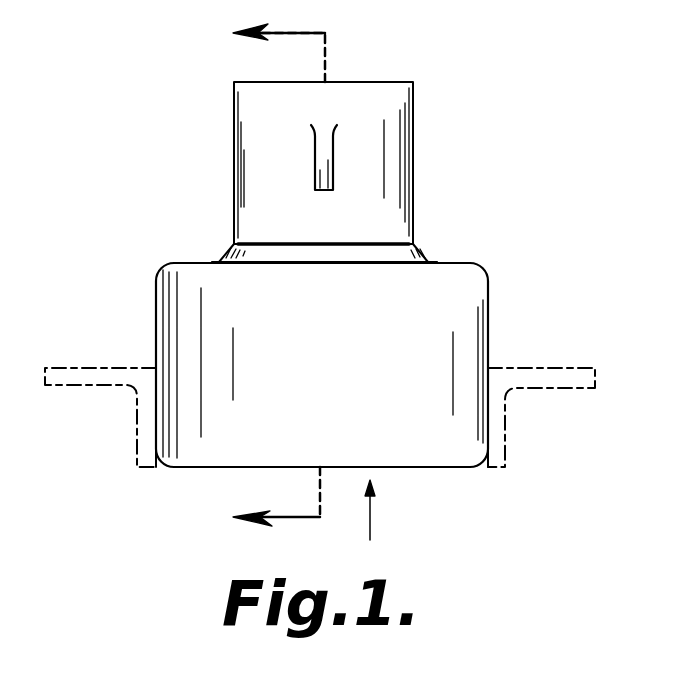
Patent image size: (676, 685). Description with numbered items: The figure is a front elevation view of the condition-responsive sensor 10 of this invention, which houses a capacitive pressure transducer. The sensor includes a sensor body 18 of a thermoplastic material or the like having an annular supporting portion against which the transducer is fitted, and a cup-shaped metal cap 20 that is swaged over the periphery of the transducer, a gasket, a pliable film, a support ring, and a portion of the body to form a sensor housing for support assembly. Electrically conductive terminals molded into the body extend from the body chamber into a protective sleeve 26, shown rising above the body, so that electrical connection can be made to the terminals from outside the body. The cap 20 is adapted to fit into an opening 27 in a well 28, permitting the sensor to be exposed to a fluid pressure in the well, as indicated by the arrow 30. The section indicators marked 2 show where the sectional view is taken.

The condition-responsive sensor 10 is at (455, 131).
The protective sleeve 26 is at (398, 83).
The sensor body 18 is at (397, 176).
The cup-shaped metal cap 20 is at (477, 283).
The well 28 is at (558, 368).
The opening 27 is at (490, 410).
The arrow 30 is at (390, 510).
The section line 2- 2 is at (264, 276).